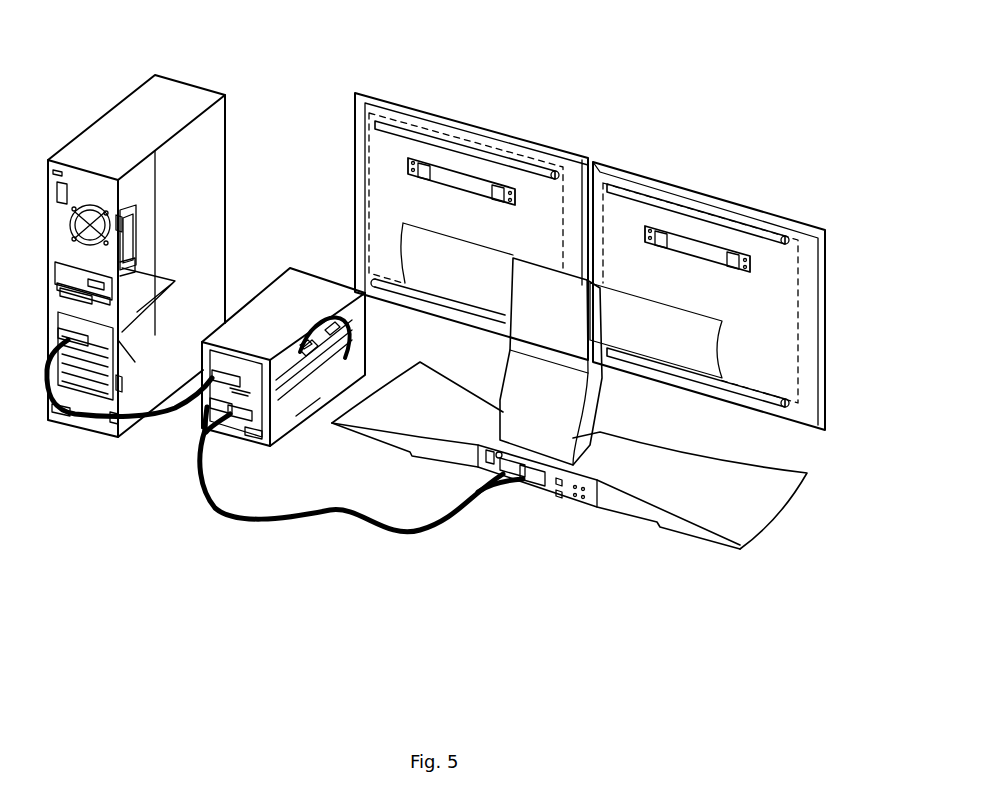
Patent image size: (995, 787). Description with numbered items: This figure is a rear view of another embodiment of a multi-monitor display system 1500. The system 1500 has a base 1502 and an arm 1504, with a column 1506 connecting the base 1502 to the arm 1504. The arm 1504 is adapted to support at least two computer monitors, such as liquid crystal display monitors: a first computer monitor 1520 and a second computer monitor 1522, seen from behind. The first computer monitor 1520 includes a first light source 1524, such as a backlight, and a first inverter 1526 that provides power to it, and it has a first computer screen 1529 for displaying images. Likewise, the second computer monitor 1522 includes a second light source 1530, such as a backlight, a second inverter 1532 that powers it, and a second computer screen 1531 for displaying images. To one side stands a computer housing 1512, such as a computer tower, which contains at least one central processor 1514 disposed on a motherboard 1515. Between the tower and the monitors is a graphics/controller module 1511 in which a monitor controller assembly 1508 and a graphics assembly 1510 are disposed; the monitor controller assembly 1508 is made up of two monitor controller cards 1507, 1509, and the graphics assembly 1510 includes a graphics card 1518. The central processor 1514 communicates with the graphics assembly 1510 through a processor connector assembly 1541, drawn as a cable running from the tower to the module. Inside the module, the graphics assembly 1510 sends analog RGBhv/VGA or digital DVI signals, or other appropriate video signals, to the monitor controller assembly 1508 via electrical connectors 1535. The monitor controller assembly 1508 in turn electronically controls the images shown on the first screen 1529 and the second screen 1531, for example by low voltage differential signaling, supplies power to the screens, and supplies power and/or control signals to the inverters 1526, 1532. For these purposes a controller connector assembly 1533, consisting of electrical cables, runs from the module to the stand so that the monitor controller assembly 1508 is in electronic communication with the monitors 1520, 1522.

The multi-monitor display system 1500 is at (664, 62).
The base 1502 is at (722, 494).
The arm 1504 is at (678, 338).
The column 1506 is at (576, 325).
The monitor controller card 1507 is at (250, 425).
The monitor controller assembly 1508 is at (316, 412).
The monitor controller card 1509 is at (232, 435).
The graphics assembly 1510 is at (323, 357).
The graphics/controller module 1511 is at (305, 293).
The computer housing 1512 is at (140, 102).
The central processor 1514 is at (127, 242).
The motherboard 1515 is at (130, 266).
The graphics card 1518 is at (305, 355).
The first computer monitor 1520 is at (832, 268).
The second computer monitor 1522 is at (352, 98).
The first light source 1524 is at (728, 218).
The first inverter 1526 is at (681, 243).
The first computer screen 1529 is at (773, 268).
The second light source 1530 is at (537, 168).
The second computer screen 1531 is at (390, 142).
The second inverter 1532 is at (471, 185).
The controller connector assembly 1533 is at (333, 517).
The electrical connectors 1535 is at (350, 328).
The processor connector assembly 1541 is at (105, 412).